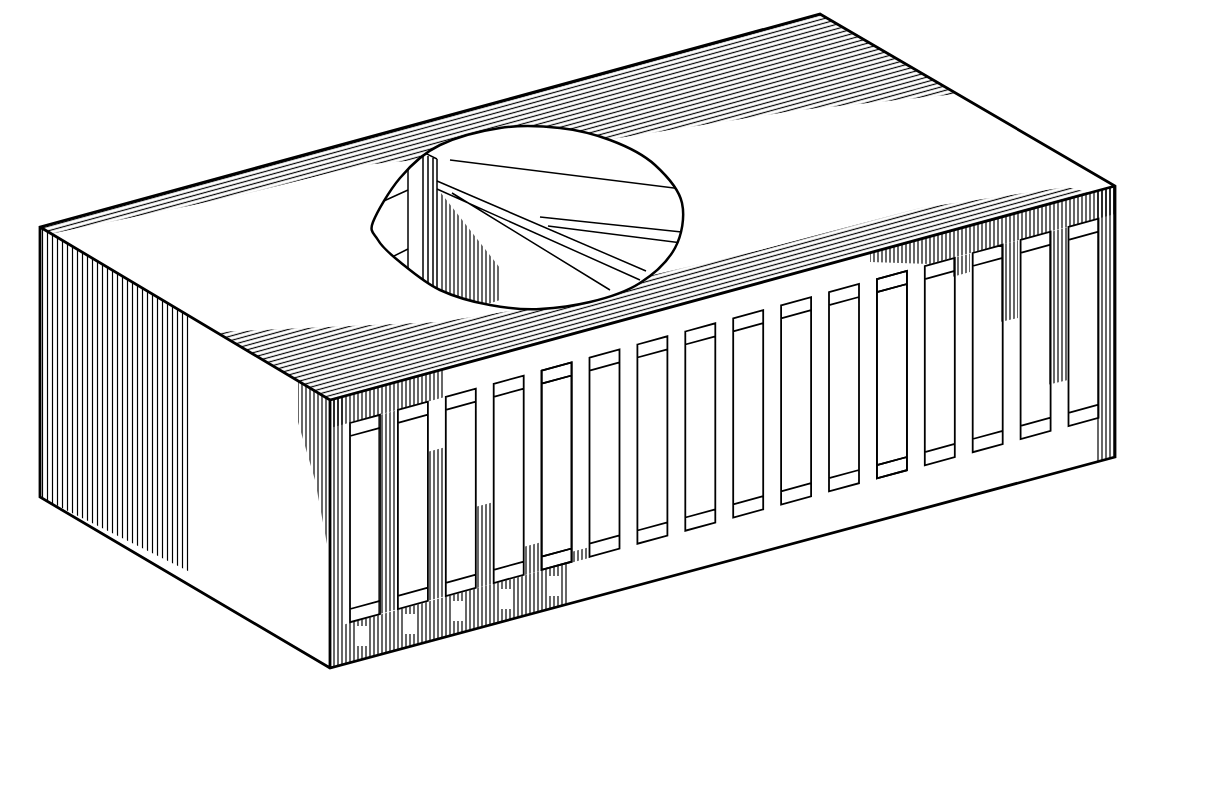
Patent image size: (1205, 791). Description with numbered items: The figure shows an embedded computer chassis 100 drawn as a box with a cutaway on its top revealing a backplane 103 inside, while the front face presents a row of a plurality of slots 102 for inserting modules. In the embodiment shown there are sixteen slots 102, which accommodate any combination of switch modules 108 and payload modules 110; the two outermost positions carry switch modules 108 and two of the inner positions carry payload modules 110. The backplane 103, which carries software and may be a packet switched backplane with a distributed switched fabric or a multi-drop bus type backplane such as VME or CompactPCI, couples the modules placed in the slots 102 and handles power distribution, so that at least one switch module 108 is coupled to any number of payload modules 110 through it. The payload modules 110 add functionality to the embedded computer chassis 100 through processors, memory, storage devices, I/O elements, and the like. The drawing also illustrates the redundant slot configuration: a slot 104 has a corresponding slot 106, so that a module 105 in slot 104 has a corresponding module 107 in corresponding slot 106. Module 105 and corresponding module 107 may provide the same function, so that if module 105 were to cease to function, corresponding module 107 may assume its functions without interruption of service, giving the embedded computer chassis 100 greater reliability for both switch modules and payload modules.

The embedded computer chassis 100 is at (577, 355).
The slots 102 is at (462, 568).
The backplane 103 is at (457, 153).
The slot 104 is at (545, 575).
The module 105 is at (562, 522).
The corresponding slot 106 is at (882, 482).
The corresponding module 107 is at (893, 438).
The switch module 108 is at (363, 598).
The payload module 110 is at (993, 432).